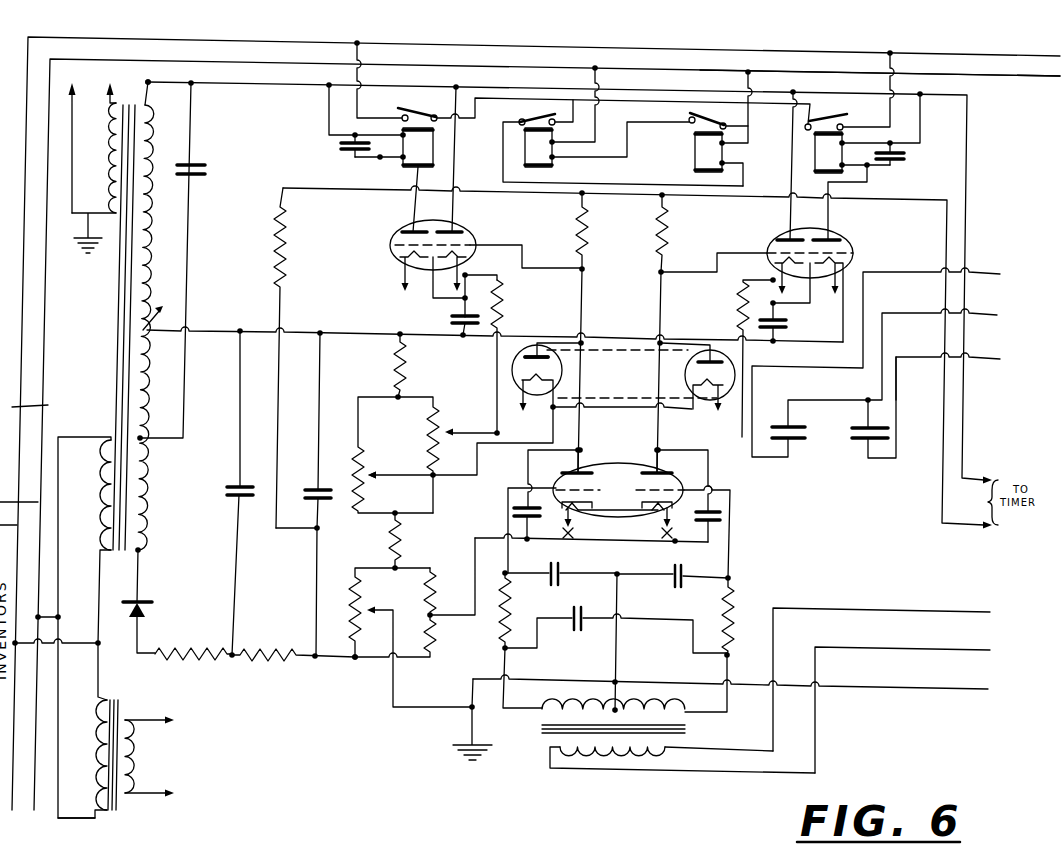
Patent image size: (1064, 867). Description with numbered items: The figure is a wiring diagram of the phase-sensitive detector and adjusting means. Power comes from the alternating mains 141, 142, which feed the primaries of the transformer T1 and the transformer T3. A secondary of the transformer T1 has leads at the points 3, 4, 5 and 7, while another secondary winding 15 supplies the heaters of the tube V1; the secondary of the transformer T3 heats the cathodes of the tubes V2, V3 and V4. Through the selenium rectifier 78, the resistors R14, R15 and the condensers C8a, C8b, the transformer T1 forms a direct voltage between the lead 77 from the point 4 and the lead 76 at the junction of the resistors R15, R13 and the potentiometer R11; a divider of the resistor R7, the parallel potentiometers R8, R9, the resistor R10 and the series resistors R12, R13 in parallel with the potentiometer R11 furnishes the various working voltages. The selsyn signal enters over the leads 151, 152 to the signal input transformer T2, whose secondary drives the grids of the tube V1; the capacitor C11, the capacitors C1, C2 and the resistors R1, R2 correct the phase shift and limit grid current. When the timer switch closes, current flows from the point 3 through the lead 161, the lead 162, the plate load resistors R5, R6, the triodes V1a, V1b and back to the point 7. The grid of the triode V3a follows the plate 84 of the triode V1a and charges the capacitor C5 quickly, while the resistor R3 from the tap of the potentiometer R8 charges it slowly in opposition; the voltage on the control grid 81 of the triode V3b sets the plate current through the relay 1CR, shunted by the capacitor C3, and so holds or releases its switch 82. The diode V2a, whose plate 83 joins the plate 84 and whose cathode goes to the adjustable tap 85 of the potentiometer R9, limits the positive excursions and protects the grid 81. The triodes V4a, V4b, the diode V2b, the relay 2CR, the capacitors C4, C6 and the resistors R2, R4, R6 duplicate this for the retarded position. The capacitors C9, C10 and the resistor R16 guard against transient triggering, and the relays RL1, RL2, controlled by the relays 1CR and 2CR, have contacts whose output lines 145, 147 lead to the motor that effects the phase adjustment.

The connection point 3 is at (148, 82).
The contact point 4 is at (158, 312).
The connection point 5 is at (142, 436).
The contact point 7 is at (142, 551).
The transformer winding with X terminals 15 is at (112, 166).
The lead 76 is at (357, 661).
The lead 77 is at (224, 315).
The selenium rectifier 78 is at (156, 605).
The control grid 81 is at (392, 250).
The switch 82 is at (406, 110).
The plate 83 is at (532, 369).
The plate 84 is at (585, 480).
The adjustable tap 85 is at (372, 477).
The main 141 is at (1003, 78).
The main 142 is at (1000, 55).
The output line 145 is at (1000, 359).
The output line 147 is at (1000, 274).
The lead 151 is at (880, 603).
The lead 152 is at (903, 643).
The lead 161 is at (992, 478).
The lead 162 is at (992, 526).
The transformer T1 is at (97, 499).
The signal input transformer T2 is at (616, 745).
The transformer T3 is at (98, 769).
The tube V1 is at (591, 497).
The triode V1a is at (563, 477).
The triode V1b is at (670, 481).
The tube V2 is at (632, 379).
The diode V2a is at (557, 335).
The diode V2b is at (715, 338).
The tube V3 is at (487, 260).
The triode V3a is at (472, 240).
The triode V3b is at (393, 235).
The tube V4 is at (810, 258).
The triode V4a is at (770, 241).
The triode V4b is at (851, 244).
The resistor R1 is at (509, 612).
The resistor R2 is at (723, 610).
The resistor R3 is at (502, 305).
The resistor R4 is at (738, 303).
The plate load resistor R5 is at (577, 231).
The plate load resistor R6 is at (665, 231).
The resistor R7 is at (403, 367).
The potentiometer R8 is at (440, 413).
The potentiometer R9 is at (364, 457).
The resistor R10 is at (400, 548).
The potentiometer R11 is at (361, 597).
The resistor R12 is at (432, 587).
The resistor R13 is at (435, 649).
The resistor R14 is at (218, 644).
The resistor R15 is at (302, 644).
The resistor R16 is at (278, 241).
The capacitor C1 is at (561, 562).
The capacitor C2 is at (674, 569).
The capacitor C3 is at (338, 149).
The capacitor C4 is at (907, 157).
The capacitor C5 is at (451, 321).
The capacitor C6 is at (787, 325).
The condenser C8a is at (225, 500).
The condenser C8b is at (322, 518).
The capacitor C9 is at (512, 513).
The capacitor C10 is at (722, 519).
The capacitor C11 is at (578, 634).
The relay RL1 is at (552, 168).
The relay RL2 is at (695, 168).
The plate current relay 1CR is at (403, 160).
The relay 2CR is at (842, 167).